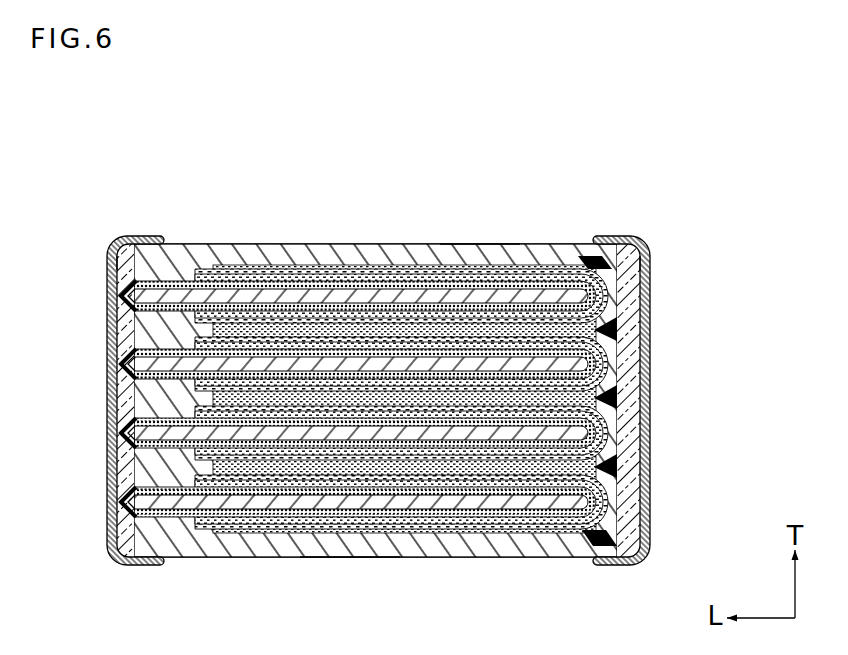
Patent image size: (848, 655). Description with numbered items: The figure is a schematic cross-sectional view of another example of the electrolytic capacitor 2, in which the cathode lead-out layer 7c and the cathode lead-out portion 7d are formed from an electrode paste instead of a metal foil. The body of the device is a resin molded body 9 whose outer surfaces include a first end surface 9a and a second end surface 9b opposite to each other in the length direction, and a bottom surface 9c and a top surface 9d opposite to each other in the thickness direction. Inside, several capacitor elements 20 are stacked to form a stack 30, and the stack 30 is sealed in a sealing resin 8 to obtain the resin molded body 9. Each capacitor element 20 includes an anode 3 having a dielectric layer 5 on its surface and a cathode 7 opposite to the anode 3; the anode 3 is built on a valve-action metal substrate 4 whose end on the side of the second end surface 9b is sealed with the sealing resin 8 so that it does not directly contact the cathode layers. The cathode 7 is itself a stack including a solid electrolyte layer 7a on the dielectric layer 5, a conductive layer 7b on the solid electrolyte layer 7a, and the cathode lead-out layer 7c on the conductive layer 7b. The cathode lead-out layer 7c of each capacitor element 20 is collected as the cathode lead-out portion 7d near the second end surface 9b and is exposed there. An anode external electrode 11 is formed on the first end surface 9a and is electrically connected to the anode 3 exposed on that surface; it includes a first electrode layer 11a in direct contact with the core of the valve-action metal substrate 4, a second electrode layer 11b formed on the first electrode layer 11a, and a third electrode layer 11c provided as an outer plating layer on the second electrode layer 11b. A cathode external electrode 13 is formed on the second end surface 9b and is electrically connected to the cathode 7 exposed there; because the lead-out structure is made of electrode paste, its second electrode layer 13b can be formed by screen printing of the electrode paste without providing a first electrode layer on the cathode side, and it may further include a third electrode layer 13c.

The electrolytic capacitor 2 is at (638, 147).
The anode 3 is at (363, 323).
The valve-action metal substrate 4 is at (222, 300).
The dielectric layer 5 is at (273, 285).
The cathode 7 is at (371, 331).
The solid electrolyte layer 7a is at (318, 272).
The conductive layer 7b is at (355, 283).
The cathode lead-out layer 7c is at (392, 292).
The cathode lead-out portion 7d is at (594, 333).
The sealing resin 8 is at (442, 250).
The resin molded body 9 is at (553, 244).
The first end surface 9a is at (116, 262).
The second end surface 9b is at (620, 258).
The bottom surface 9c is at (352, 560).
The top surface 9d is at (477, 250).
The anode external electrode 11 is at (95, 361).
The first electrode layer 11a is at (127, 362).
The second electrode layer 11b is at (127, 403).
The third electrode layer 11c is at (113, 483).
The cathode external electrode 13 is at (662, 364).
The second electrode layer 13b is at (640, 402).
The third electrode layer 13c is at (645, 486).
The capacitor element 20 is at (371, 314).
The stack 30 is at (500, 262).